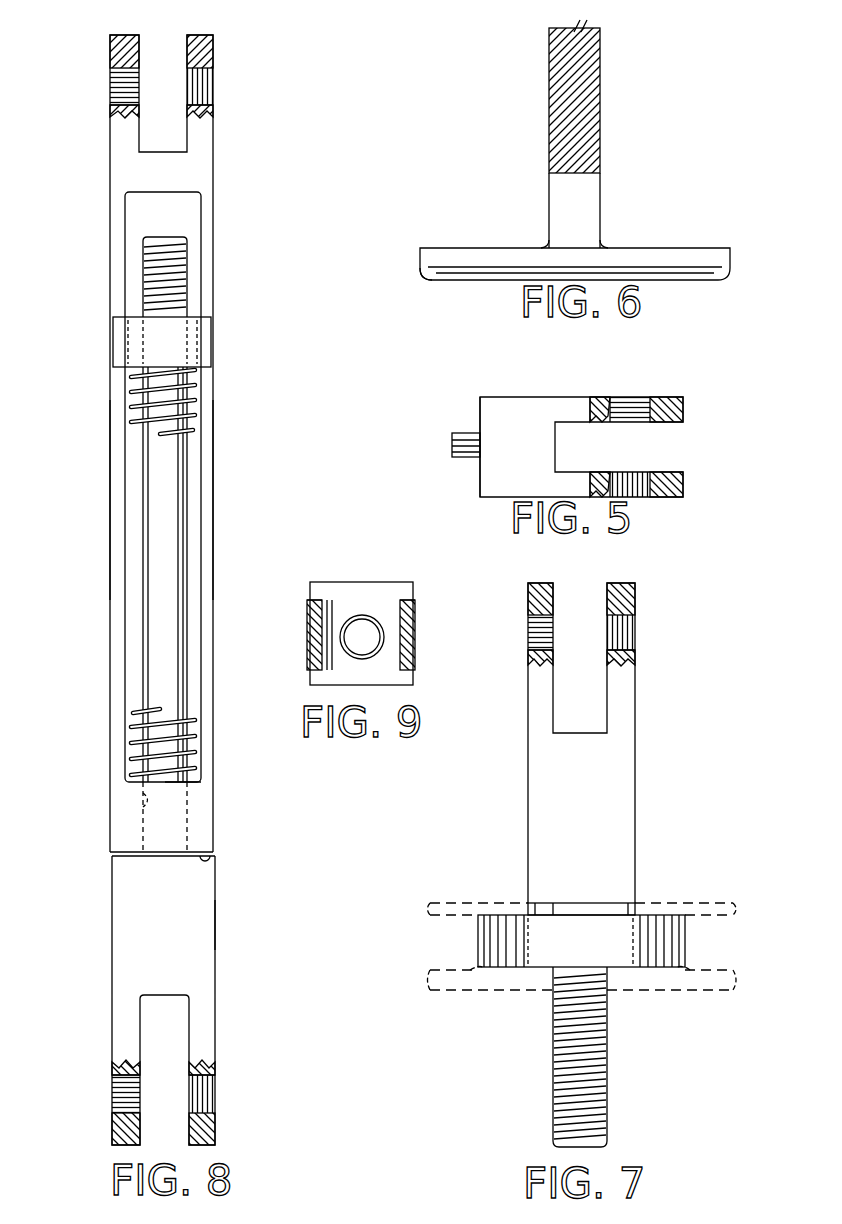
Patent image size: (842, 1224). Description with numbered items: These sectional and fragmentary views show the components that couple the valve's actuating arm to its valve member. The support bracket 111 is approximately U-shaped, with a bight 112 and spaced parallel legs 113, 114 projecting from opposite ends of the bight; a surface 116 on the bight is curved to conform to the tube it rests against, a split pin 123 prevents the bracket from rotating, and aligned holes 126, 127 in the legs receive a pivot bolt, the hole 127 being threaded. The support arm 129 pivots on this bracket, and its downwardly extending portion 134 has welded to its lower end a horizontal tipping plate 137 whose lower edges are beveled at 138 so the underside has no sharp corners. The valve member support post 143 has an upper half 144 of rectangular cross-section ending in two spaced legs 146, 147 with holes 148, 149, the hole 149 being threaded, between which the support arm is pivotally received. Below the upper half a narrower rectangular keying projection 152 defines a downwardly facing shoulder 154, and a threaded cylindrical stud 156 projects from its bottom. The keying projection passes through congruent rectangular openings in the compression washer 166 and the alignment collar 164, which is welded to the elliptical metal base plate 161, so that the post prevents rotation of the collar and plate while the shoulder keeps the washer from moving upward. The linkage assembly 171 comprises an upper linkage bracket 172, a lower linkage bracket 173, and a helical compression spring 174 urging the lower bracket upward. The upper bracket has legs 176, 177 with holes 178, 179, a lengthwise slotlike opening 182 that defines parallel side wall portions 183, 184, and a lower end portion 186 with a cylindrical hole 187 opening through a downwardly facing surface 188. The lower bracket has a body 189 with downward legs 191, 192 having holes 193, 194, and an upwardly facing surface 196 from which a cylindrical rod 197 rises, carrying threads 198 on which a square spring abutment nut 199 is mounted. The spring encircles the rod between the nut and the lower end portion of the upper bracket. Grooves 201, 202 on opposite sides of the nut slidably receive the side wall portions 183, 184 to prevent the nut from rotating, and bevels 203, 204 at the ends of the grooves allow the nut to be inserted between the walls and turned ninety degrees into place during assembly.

In FIG. 5, the support bracket 111 is at (576, 440).
In FIG. 5, the bight 112 is at (497, 412).
In FIG. 5, the leg 113 is at (670, 492).
In FIG. 5, the leg 114 is at (683, 410).
In FIG. 5, the surface 116 is at (480, 407).
In FIG. 5, the split pin 123 is at (462, 432).
In FIG. 5, the hole 126 is at (640, 485).
In FIG. 5, the hole 127 is at (640, 405).
In FIG. 6, the support arm 129 is at (619, 134).
In FIG. 6, the portion 134 is at (577, 108).
In FIG. 6, the tipping plate 137 is at (668, 262).
In FIG. 6, the bevel 138 is at (426, 274).
In FIG. 7, the valve member support post 143 is at (611, 725).
In FIG. 7, the upper half 144 is at (617, 798).
In FIG. 7, the leg 146 is at (540, 583).
In FIG. 7, the leg 147 is at (632, 583).
In FIG. 7, the hole 148 is at (545, 620).
In FIG. 7, the hole 149 is at (625, 645).
In FIG. 7, the keying projection 152 is at (615, 903).
In FIG. 7, the shoulder 154 is at (553, 905).
In FIG. 7, the threaded cylindrical stud 156 is at (565, 1130).
In FIG. 7, the elliptical metal base plate 161 is at (722, 990).
In FIG. 7, the alignment collar 164 is at (672, 938).
In FIG. 7, the compression washer 166 is at (740, 897).
In FIG. 8, the linkage assembly 171 is at (96, 596).
In FIG. 8, the upper linkage bracket 172 is at (100, 178).
In FIG. 8, the lower linkage bracket 173 is at (102, 931).
In FIG. 8, the helical compression spring 174 is at (135, 712).
In FIG. 8, the leg 176 is at (122, 50).
In FIG. 8, the leg 177 is at (203, 50).
In FIG. 8, the hole 178 is at (128, 100).
In FIG. 8, the hole 179 is at (200, 100).
In FIG. 8, the slotlike opening 182 is at (127, 552).
In FIG. 8, the side wall portion 183 is at (117, 502).
In FIG. 9, the side wall portion 183 is at (312, 646).
In FIG. 8, the side wall portion 184 is at (210, 512).
In FIG. 9, the side wall portion 184 is at (412, 640).
In FIG. 8, the lower end portion 186 is at (200, 806).
In FIG. 8, the cylindrical hole 187 is at (143, 800).
In FIG. 8, the downwardly facing surface 188 is at (207, 862).
In FIG. 8, the body 189 is at (195, 918).
In FIG. 8, the leg 191 is at (125, 1140).
In FIG. 8, the leg 192 is at (200, 1135).
In FIG. 8, the hole 193 is at (128, 1108).
In FIG. 8, the hole 194 is at (205, 1113).
In FIG. 8, the upwardly facing surface 196 is at (130, 852).
In FIG. 8, the cylindrical rod 197 is at (167, 532).
In FIG. 9, the cylindrical rod 197 is at (365, 640).
In FIG. 8, the threads 198 is at (148, 275).
In FIG. 8, the spring abutment nut 199 is at (158, 341).
In FIG. 9, the spring abutment nut 199 is at (325, 680).
In FIG. 8, the groove 201 is at (115, 358).
In FIG. 9, the groove 201 is at (318, 600).
In FIG. 8, the groove 202 is at (213, 327).
In FIG. 9, the groove 202 is at (408, 600).
In FIG. 8, the bevel 203 is at (112, 326).
In FIG. 9, the bevel 203 is at (320, 655).
In FIG. 8, the bevel 204 is at (205, 365).